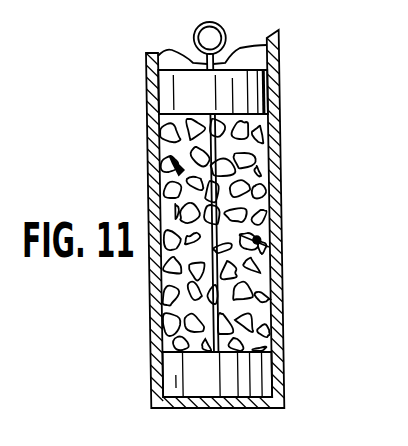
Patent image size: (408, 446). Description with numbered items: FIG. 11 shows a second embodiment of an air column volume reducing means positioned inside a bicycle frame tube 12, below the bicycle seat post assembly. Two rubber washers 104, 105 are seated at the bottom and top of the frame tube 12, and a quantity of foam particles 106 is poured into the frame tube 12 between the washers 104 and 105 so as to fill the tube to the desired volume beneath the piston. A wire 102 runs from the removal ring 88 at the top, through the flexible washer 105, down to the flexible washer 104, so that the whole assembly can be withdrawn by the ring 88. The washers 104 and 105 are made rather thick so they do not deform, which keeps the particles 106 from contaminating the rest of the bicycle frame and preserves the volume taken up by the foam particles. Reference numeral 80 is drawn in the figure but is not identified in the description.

The frame tube 12 is at (281, 167).
The central rod 80 is at (175, 165).
The removal ring 88 is at (226, 40).
The wire 102 is at (257, 243).
The rubber washer 104 is at (232, 373).
The rubber washer 105 is at (240, 97).
The foam particles 106 is at (259, 220).